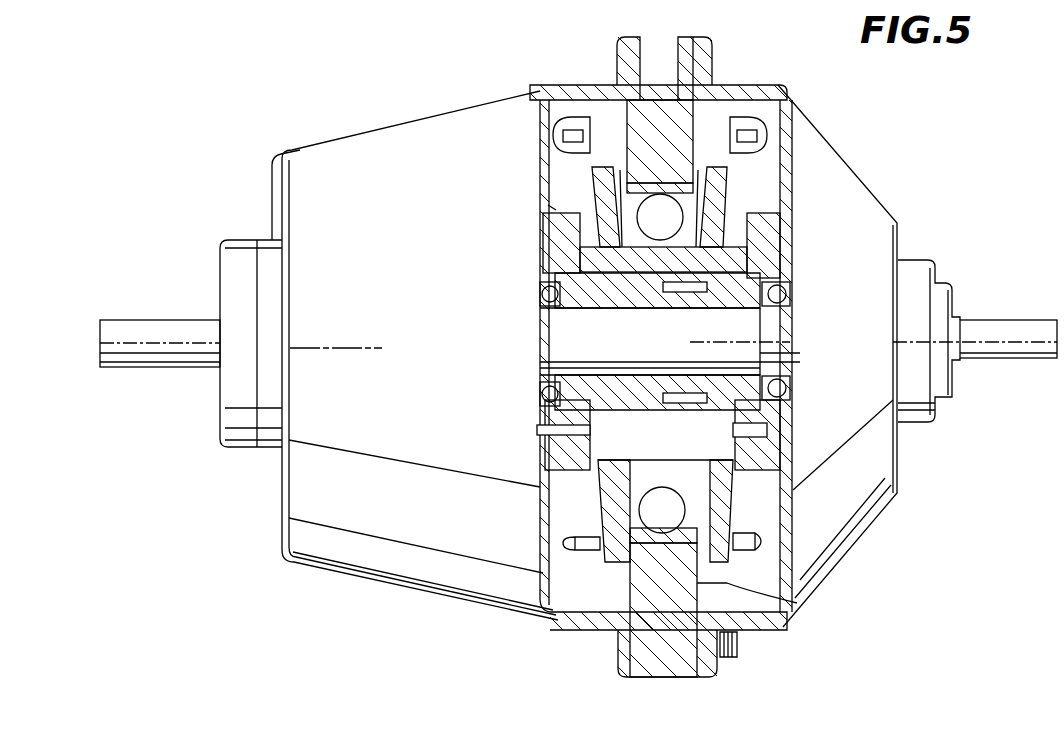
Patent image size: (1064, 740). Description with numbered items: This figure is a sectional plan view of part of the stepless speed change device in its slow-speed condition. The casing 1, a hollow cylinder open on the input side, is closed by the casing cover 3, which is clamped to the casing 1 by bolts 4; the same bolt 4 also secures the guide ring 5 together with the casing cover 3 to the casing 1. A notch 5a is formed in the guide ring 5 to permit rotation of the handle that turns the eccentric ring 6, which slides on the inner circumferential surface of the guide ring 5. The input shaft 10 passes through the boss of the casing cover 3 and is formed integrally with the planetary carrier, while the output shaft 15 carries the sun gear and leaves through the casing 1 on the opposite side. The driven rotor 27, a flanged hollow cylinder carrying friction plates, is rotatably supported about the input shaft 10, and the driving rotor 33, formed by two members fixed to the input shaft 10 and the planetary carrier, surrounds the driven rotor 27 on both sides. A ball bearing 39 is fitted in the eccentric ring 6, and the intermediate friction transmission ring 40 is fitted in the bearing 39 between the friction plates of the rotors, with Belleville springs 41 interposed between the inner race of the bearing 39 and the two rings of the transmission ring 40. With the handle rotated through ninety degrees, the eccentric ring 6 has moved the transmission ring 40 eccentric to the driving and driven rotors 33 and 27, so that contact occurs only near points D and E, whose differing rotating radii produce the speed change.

The casing 1 is at (420, 583).
The casing cover 3 is at (835, 560).
The bolt 4 is at (740, 645).
The guide ring 5 is at (676, 662).
The notch 5a is at (668, 48).
The eccentric ring 6 is at (775, 600).
The input shaft 10 is at (1035, 358).
The output shaft 15 is at (162, 368).
The driven rotor 27 is at (553, 217).
The driving rotor 33 is at (545, 160).
The ball bearing 39 is at (655, 530).
The intermediate friction transmission ring 40 is at (600, 170).
The Belleville springs 41 is at (717, 203).
The contacting point D is at (606, 552).
The contacting point E is at (548, 205).